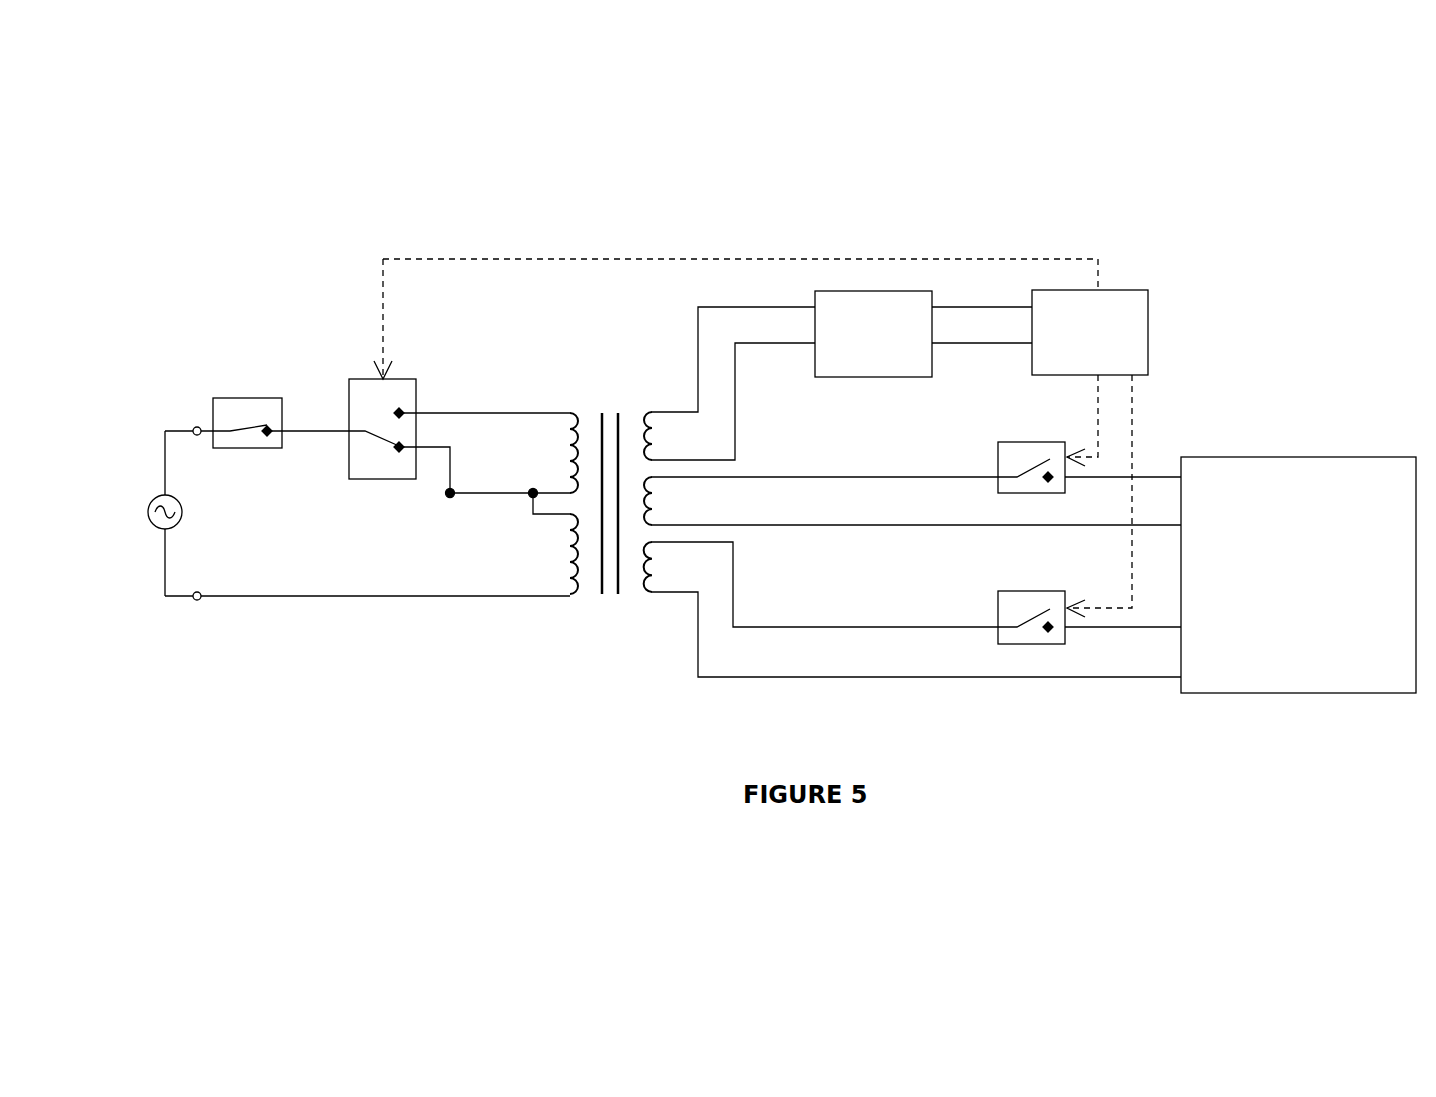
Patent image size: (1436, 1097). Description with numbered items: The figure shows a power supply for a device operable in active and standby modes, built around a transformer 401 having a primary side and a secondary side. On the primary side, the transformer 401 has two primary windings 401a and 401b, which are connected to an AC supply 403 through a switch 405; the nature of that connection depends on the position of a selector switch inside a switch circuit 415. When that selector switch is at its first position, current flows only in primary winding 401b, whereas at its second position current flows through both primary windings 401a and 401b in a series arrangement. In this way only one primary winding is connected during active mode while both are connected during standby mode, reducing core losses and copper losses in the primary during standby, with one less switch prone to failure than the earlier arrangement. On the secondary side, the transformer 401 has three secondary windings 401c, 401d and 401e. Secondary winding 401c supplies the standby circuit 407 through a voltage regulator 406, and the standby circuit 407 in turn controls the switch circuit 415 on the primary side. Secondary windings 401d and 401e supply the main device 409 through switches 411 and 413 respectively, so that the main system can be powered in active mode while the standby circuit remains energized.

The transformer 401 is at (849, 492).
The primary winding 401a is at (548, 453).
The primary winding 401b is at (548, 554).
The secondary winding 401c is at (729, 383).
The secondary winding 401d is at (912, 501).
The secondary winding 401e is at (912, 609).
The AC supply 403 is at (149, 474).
The switch 405 is at (296, 389).
The voltage regulator 406 is at (924, 279).
The standby circuit 407 is at (1162, 292).
The main device 409 is at (1331, 444).
The switch 411 is at (1026, 419).
The switch 413 is at (1018, 569).
The switch circuit 415 is at (430, 368).